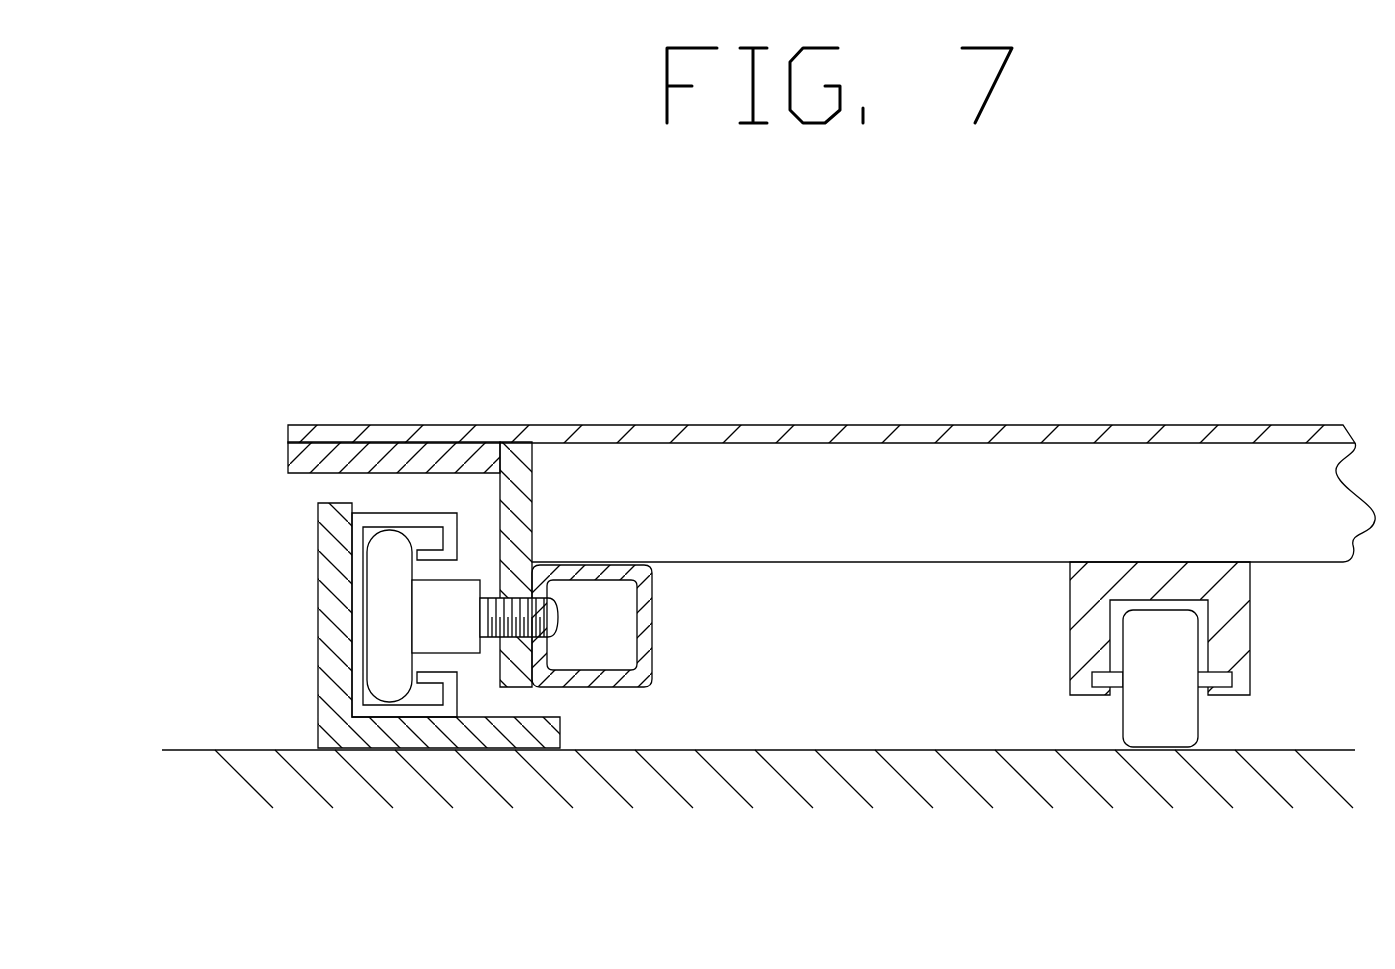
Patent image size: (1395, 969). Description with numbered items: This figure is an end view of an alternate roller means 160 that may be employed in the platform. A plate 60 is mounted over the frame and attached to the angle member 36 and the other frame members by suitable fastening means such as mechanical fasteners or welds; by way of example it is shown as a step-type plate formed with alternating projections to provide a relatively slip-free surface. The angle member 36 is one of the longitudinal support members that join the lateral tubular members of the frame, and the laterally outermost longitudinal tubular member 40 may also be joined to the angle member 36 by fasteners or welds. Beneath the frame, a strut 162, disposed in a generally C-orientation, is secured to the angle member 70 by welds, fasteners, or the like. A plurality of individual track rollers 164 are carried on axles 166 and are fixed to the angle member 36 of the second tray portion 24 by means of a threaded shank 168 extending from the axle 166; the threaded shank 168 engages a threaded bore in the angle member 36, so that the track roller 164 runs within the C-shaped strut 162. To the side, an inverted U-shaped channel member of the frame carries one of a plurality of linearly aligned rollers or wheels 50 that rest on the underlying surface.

The second tray portion 24 is at (870, 507).
The plate 60 is at (1017, 433).
The angle member 36 is at (515, 460).
The angle member 70 is at (383, 750).
The alternate roller means 160 is at (432, 587).
The strut 162 is at (377, 513).
The track roller 164 is at (380, 600).
The axle 166 is at (428, 627).
The threaded shank 168 is at (545, 627).
The longitudinal tubular member 40 is at (595, 690).
The roller 50 is at (1153, 693).